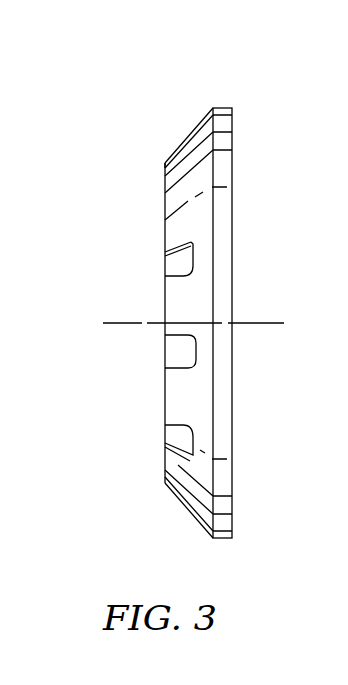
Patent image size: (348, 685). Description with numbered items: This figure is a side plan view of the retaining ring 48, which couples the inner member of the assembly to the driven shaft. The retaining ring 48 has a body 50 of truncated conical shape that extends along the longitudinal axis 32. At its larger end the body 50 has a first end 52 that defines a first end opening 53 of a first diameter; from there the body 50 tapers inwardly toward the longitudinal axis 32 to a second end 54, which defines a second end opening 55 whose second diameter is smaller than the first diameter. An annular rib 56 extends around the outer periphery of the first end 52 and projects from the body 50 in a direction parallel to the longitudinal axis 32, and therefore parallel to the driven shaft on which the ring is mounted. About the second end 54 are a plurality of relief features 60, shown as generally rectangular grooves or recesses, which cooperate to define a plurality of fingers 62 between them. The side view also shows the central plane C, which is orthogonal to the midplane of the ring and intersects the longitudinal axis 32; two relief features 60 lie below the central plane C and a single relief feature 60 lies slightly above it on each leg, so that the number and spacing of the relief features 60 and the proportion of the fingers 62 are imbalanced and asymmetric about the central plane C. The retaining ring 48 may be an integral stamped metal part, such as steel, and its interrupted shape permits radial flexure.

The retaining ring 48 is at (147, 130).
The body 50 is at (188, 137).
The first end 52 is at (212, 108).
The second end 54 is at (163, 163).
The second end opening 55 is at (150, 490).
The relief features 60 is at (163, 263).
The fingers 62 is at (163, 302).
The longitudinal axis 32 is at (268, 323).
The annular rib 56 is at (225, 541).
The first end opening 53 is at (266, 110).
The central plane C is at (347, 278).